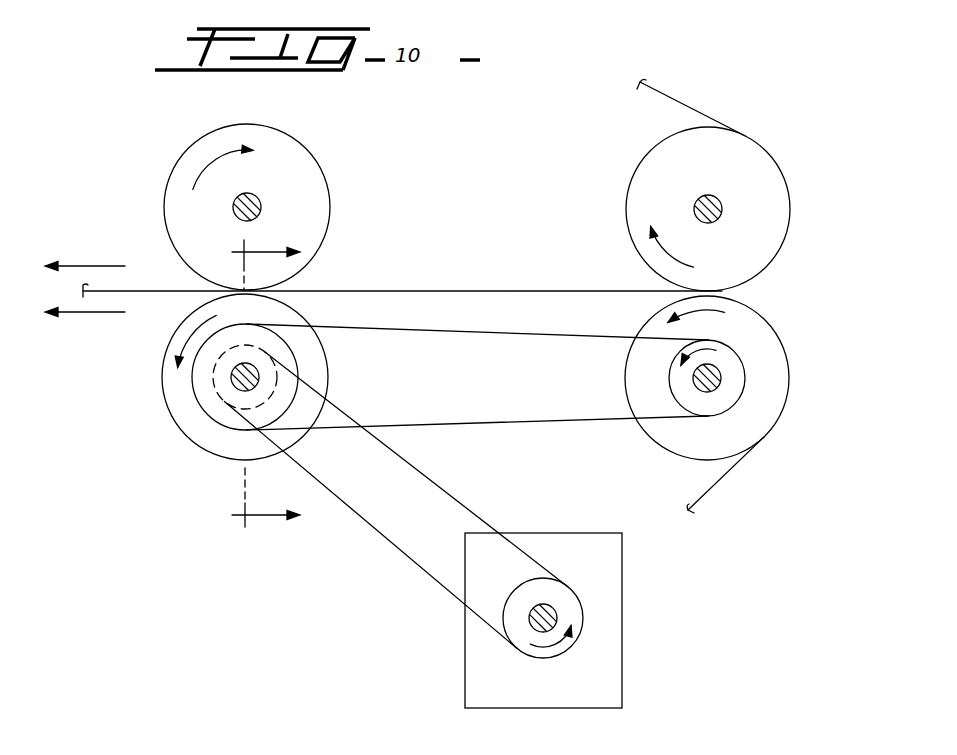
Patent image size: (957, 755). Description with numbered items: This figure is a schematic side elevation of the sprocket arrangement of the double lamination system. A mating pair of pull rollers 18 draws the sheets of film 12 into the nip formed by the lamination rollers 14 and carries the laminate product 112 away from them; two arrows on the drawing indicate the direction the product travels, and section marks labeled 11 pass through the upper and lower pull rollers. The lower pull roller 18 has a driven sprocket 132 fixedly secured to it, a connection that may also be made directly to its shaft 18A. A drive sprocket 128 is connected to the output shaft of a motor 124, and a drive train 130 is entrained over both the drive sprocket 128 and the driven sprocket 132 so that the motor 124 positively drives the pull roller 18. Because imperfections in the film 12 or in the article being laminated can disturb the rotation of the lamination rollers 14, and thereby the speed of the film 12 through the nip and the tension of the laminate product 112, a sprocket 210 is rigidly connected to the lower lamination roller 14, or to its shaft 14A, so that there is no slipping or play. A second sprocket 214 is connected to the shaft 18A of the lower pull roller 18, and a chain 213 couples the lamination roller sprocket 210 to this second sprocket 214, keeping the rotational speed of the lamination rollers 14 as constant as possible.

The section line 11- 11 is at (259, 387).
The film 12 is at (698, 103).
The lamination roller 14 is at (752, 176).
The shaft 14A is at (722, 212).
The pull roller 18 is at (292, 158).
The shaft 18A is at (258, 205).
The laminate product 112 is at (150, 282).
The motor 124 is at (592, 668).
The drive sprocket 128 is at (567, 600).
The drive train 130 is at (384, 550).
The driven sprocket 132 is at (212, 383).
The sprocket 210 is at (718, 404).
The chain 213 is at (584, 433).
The second sprocket 214 is at (205, 401).